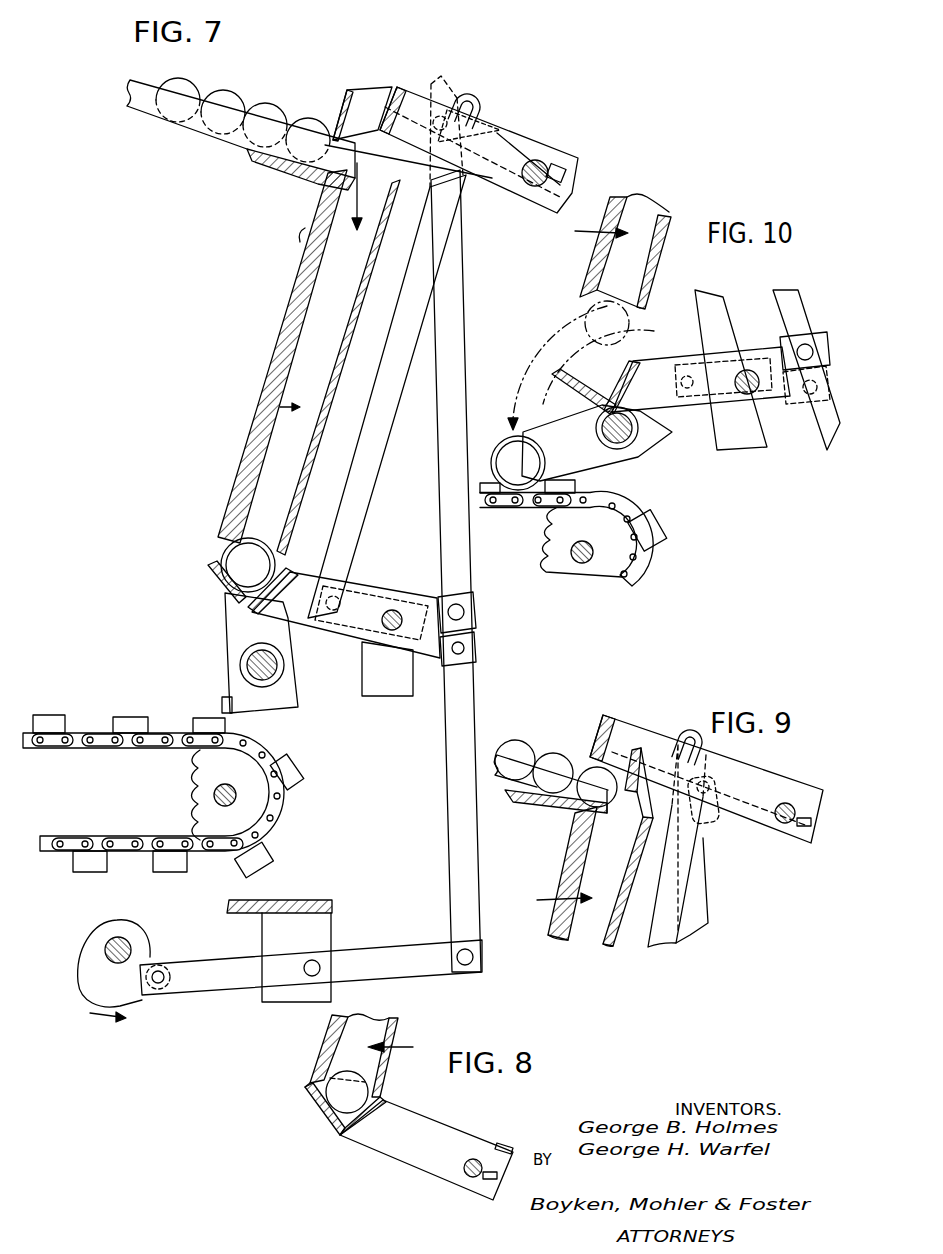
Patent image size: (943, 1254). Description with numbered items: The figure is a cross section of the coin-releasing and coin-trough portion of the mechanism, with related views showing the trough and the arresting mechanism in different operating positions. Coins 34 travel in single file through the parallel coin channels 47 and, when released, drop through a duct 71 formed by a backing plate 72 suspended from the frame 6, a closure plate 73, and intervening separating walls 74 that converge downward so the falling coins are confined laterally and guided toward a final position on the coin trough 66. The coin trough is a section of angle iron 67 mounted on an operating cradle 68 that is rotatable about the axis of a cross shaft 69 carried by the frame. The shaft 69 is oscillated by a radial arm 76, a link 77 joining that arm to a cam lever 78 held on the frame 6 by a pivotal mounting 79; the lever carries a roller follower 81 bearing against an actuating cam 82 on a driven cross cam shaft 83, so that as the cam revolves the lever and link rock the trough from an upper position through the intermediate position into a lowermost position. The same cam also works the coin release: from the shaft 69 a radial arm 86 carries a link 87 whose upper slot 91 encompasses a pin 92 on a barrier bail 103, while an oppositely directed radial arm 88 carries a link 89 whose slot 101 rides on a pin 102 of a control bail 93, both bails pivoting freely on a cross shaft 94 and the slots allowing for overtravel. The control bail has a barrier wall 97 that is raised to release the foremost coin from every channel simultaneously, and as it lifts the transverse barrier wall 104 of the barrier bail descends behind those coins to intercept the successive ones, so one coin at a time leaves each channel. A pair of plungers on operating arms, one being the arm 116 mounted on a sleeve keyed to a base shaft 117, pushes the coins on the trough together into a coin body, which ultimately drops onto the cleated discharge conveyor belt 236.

In FIG. 7, the frame 6 is at (282, 1002).
In FIG. 7, the coin 34 is at (232, 88).
In FIG. 7, the coin channels 47 is at (125, 105).
In FIG. 7, the coin trough 66 is at (230, 575).
In FIG. 10, the coin trough 66 is at (580, 393).
In FIG. 8, the coin trough 66 is at (322, 1108).
In FIG. 7, the angle iron 67 is at (287, 570).
In FIG. 7, the operating cradle 68 is at (308, 622).
In FIG. 7, the cross shaft 69 is at (390, 610).
In FIG. 8, the cross shaft 69 is at (473, 1160).
In FIG. 7, the duct 71 is at (262, 414).
In FIG. 10, the duct 71 is at (613, 251).
In FIG. 9, the duct 71 is at (573, 843).
In FIG. 8, the duct 71 is at (372, 1055).
In FIG. 7, the backing plate 72 is at (290, 320).
In FIG. 7, the closure plate 73 is at (347, 348).
In FIG. 7, the separating walls 74 is at (340, 277).
In FIG. 7, the radial arm 76 is at (432, 592).
In FIG. 7, the link 77 is at (450, 745).
In FIG. 7, the cam lever 78 is at (432, 972).
In FIG. 7, the pivotal mounting 79 is at (317, 962).
In FIG. 7, the roller follower 81 is at (168, 983).
In FIG. 7, the actuating cam 82 is at (80, 962).
In FIG. 7, the cross cam shaft 83 is at (118, 938).
In FIG. 7, the radial arm 86 is at (428, 658).
In FIG. 7, the link 87 is at (458, 357).
In FIG. 9, the link 87 is at (703, 890).
In FIG. 7, the radial arm 88 is at (355, 625).
In FIG. 7, the link 89 is at (373, 492).
In FIG. 9, the link 89 is at (670, 943).
In FIG. 7, the slot 91 is at (430, 128).
In FIG. 7, the pin 92 is at (432, 84).
In FIG. 7, the control bail 93 is at (493, 118).
In FIG. 7, the cross shaft 94 is at (543, 163).
In FIG. 9, the cross shaft 94 is at (785, 822).
In FIG. 7, the barrier wall 97 is at (375, 115).
In FIG. 9, the barrier wall 97 is at (627, 757).
In FIG. 7, the slot 101 is at (487, 102).
In FIG. 7, the pin 102 is at (497, 135).
In FIG. 7, the barrier bail 103 is at (363, 63).
In FIG. 7, the barrier wall 104 is at (352, 112).
In FIG. 9, the barrier wall 104 is at (600, 723).
In FIG. 7, the operating arm 116 is at (228, 648).
In FIG. 10, the operating arm 116 is at (590, 467).
In FIG. 7, the base shaft 117 is at (250, 667).
In FIG. 10, the base shaft 117 is at (630, 443).
In FIG. 7, the discharge conveyor belt 236 is at (163, 747).
In FIG. 10, the discharge conveyor belt 236 is at (530, 503).